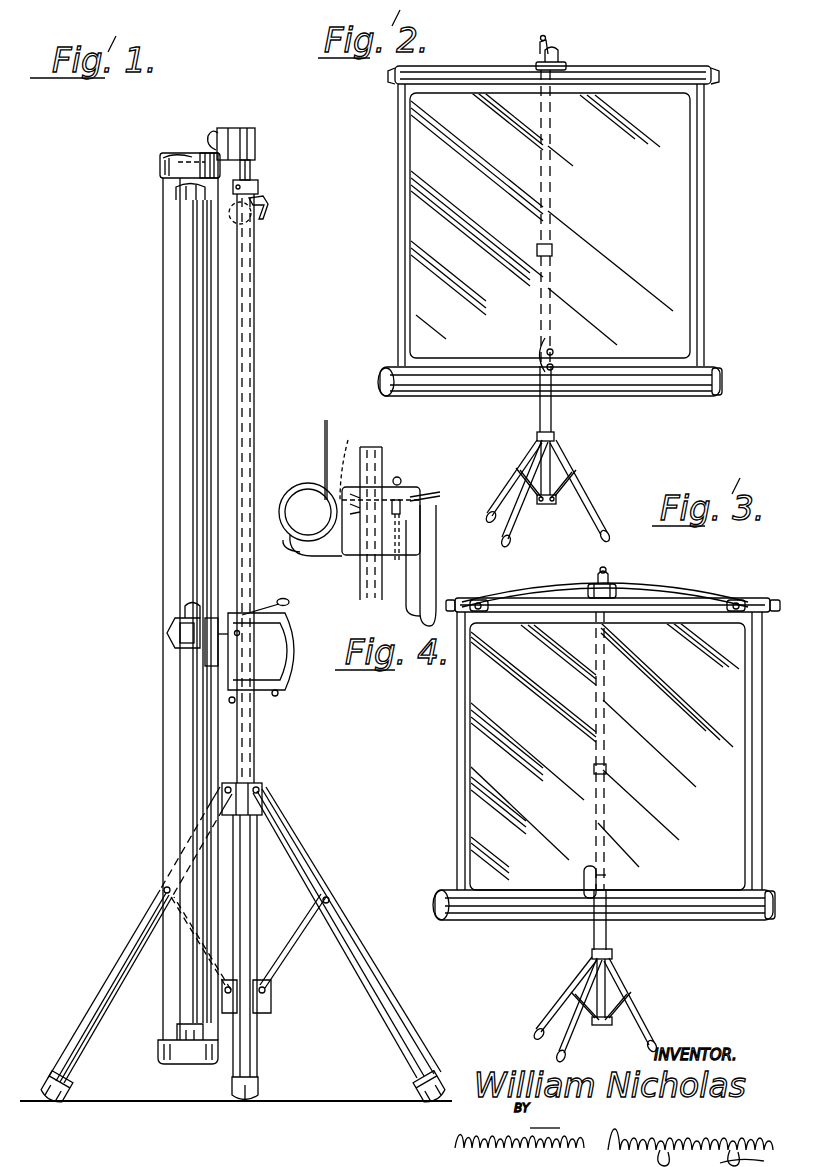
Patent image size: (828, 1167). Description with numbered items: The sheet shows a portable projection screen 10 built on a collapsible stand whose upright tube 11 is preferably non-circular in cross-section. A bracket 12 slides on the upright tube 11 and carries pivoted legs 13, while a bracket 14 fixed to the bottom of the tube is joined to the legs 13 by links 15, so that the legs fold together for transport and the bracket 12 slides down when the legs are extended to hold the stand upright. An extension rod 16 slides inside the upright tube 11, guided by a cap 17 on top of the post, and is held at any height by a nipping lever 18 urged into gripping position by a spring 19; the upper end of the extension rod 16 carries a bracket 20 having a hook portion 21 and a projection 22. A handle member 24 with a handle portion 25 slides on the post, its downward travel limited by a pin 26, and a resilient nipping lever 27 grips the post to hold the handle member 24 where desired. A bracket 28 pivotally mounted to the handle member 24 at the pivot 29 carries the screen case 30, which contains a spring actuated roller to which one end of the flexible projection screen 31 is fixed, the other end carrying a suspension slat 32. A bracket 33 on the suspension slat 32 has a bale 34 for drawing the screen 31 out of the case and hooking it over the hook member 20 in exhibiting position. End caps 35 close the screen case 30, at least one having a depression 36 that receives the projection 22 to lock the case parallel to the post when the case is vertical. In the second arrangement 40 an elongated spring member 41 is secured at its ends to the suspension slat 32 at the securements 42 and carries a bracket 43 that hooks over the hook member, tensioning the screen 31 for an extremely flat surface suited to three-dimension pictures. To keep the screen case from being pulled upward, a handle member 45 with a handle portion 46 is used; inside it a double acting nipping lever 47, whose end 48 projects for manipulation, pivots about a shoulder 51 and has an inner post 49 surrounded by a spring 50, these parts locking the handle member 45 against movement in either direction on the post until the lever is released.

In FIG. 1, the projection screen 10 is at (270, 392).
In FIG. 2, the projection screen 10 is at (716, 208).
In FIG. 1, the upright tube 11 is at (256, 292).
In FIG. 4, the upright tube 11 is at (362, 588).
In FIG. 2, the upright tube 11 is at (548, 296).
In FIG. 3, the upright tube 11 is at (607, 930).
In FIG. 1, the bracket 12 is at (265, 792).
In FIG. 2, the bracket 12 is at (556, 436).
In FIG. 3, the bracket 12 is at (613, 954).
In FIG. 1, the legs 13 is at (112, 978).
In FIG. 2, the legs 13 is at (510, 484).
In FIG. 3, the legs 13 is at (556, 1014).
In FIG. 1, the bracket 14 is at (270, 1002).
In FIG. 2, the bracket 14 is at (546, 499).
In FIG. 3, the bracket 14 is at (602, 1021).
In FIG. 1, the links 15 is at (222, 975).
In FIG. 2, the links 15 is at (556, 482).
In FIG. 3, the links 15 is at (586, 992).
In FIG. 1, the extension rod 16 is at (252, 170).
In FIG. 2, the extension rod 16 is at (552, 178).
In FIG. 1, the cap 17 is at (259, 187).
In FIG. 1, the nipping lever 18 is at (270, 210).
In FIG. 1, the spring 19 is at (251, 229).
In FIG. 1, the bracket 20 is at (232, 134).
In FIG. 2, the bracket 20 is at (545, 42).
In FIG. 3, the bracket 20 is at (606, 576).
In FIG. 1, the hook portion 21 is at (212, 135).
In FIG. 1, the projection 22 is at (200, 158).
In FIG. 1, the handle member 24 is at (272, 696).
In FIG. 2, the handle member 24 is at (540, 352).
In FIG. 1, the handle portion 25 is at (300, 684).
In FIG. 1, the pin 26 is at (234, 704).
In FIG. 1, the resilient nipping lever 27 is at (258, 606).
In FIG. 1, the bracket 28 is at (210, 650).
In FIG. 4, the bracket 28 is at (320, 556).
In FIG. 1, the pivot 29 is at (246, 634).
In FIG. 1, the screen case 30 is at (168, 522).
In FIG. 4, the screen case 30 is at (305, 495).
In FIG. 2, the screen case 30 is at (494, 392).
In FIG. 3, the screen case 30 is at (520, 912).
In FIG. 2, the flexible projection screen 31 is at (700, 278).
In FIG. 3, the flexible projection screen 31 is at (752, 652).
In FIG. 1, the suspension slat 32 is at (184, 760).
In FIG. 2, the suspension slat 32 is at (705, 66).
In FIG. 3, the suspension slat 32 is at (756, 600).
In FIG. 1, the bracket 33 is at (188, 606).
In FIG. 2, the bracket 33 is at (560, 64).
In FIG. 1, the bale 34 is at (167, 632).
In FIG. 2, the bale 34 is at (554, 50).
In FIG. 1, the end caps 35 is at (160, 172).
In FIG. 2, the end caps 35 is at (382, 372).
In FIG. 3, the end caps 35 is at (444, 920).
In FIG. 1, the depression 36 is at (162, 156).
In FIG. 3, the projection screen arrangement 40 is at (610, 568).
In FIG. 3, the elongated spring member 41 is at (680, 588).
In FIG. 3, the end securement 42 is at (480, 600).
In FIG. 3, the bracket 43 is at (618, 586).
In FIG. 4, the handle member 45 is at (405, 490).
In FIG. 3, the handle member 45 is at (588, 866).
In FIG. 4, the handle portion 46 is at (437, 562).
In FIG. 4, the double acting nipping lever 47 is at (402, 512).
In FIG. 4, the lever end 48 is at (436, 494).
In FIG. 4, the post 49 is at (387, 487).
In FIG. 4, the spring 50 is at (343, 460).
In FIG. 4, the shoulder 51 is at (401, 551).